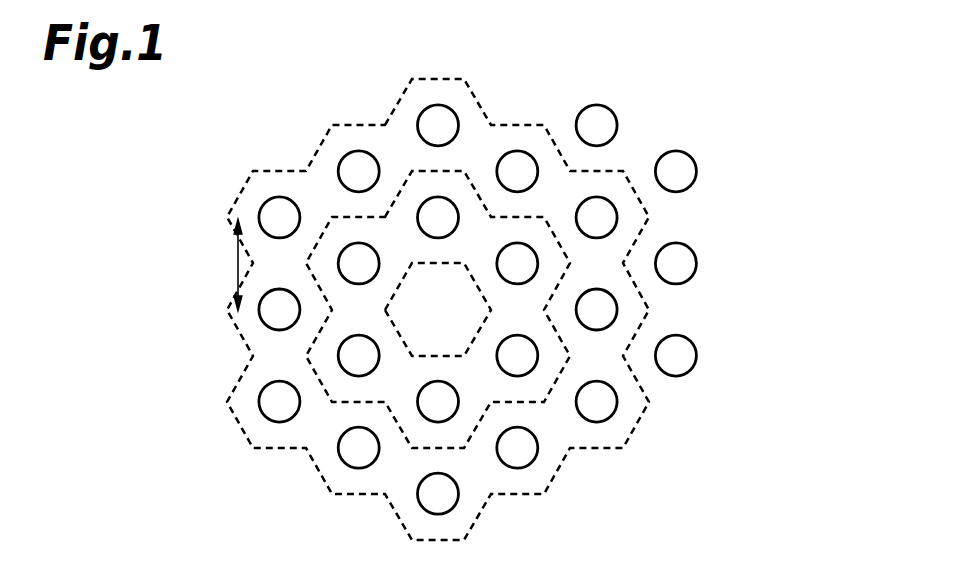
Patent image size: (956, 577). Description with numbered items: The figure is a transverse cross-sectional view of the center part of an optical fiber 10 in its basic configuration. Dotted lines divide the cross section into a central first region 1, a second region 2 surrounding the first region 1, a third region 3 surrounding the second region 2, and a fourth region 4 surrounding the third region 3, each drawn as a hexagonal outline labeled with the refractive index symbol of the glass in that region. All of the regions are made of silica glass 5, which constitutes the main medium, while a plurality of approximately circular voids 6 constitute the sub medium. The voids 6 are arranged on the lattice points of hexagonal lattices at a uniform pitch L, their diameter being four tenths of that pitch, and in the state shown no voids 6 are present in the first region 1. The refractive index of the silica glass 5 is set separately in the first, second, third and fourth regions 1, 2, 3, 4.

The optical fiber 10 is at (810, 223).
The first region 1 is at (455, 283).
The second region 2 is at (538, 238).
The third region 3 is at (630, 210).
The fourth region 4 is at (682, 313).
The silica glass 5 is at (298, 463).
The voids 6 is at (372, 465).